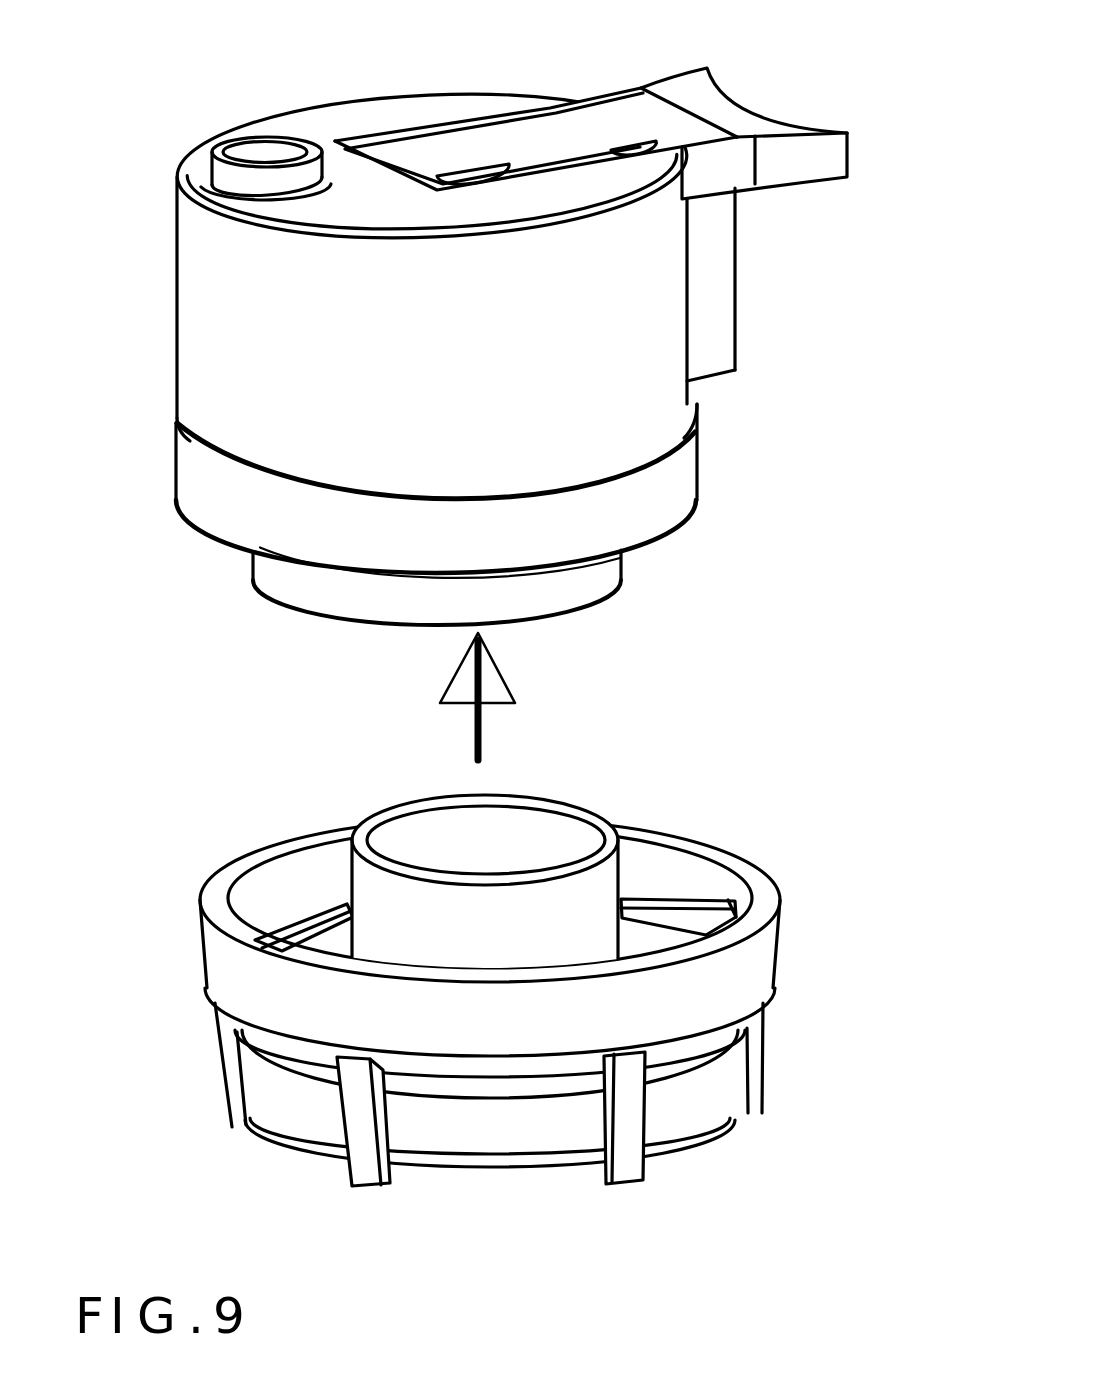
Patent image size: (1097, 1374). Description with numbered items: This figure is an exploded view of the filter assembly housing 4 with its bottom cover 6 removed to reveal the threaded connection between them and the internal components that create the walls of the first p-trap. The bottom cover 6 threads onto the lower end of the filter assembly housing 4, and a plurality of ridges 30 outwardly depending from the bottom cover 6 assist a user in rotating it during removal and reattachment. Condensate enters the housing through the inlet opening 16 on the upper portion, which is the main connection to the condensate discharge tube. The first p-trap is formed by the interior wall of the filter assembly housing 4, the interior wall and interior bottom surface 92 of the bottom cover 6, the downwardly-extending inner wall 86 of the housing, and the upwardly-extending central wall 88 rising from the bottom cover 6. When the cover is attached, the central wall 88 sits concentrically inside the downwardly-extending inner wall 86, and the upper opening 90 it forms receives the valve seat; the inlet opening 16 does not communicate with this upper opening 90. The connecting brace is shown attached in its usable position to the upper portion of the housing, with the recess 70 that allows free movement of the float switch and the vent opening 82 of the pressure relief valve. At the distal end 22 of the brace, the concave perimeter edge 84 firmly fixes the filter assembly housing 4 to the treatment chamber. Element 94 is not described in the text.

The filter assembly housing 4 is at (645, 355).
The bottom cover 6 is at (270, 987).
The inlet opening 16 is at (265, 150).
The distal end 22 is at (793, 163).
The ridges 30 is at (637, 1145).
The recess 70 is at (475, 173).
The vent opening 82 is at (633, 143).
The concave perimeter edge 84 is at (733, 103).
The downwardly-extending inner wall 86 is at (593, 585).
The upwardly-extending central wall 88 is at (380, 927).
The upper opening 90 is at (410, 835).
The interior bottom surface 92 is at (642, 947).
The rib end 94 is at (737, 918).